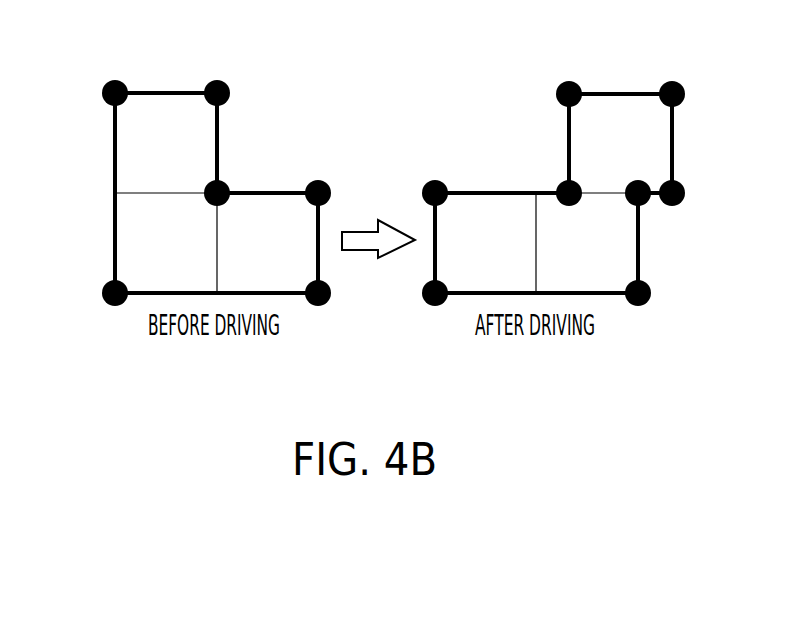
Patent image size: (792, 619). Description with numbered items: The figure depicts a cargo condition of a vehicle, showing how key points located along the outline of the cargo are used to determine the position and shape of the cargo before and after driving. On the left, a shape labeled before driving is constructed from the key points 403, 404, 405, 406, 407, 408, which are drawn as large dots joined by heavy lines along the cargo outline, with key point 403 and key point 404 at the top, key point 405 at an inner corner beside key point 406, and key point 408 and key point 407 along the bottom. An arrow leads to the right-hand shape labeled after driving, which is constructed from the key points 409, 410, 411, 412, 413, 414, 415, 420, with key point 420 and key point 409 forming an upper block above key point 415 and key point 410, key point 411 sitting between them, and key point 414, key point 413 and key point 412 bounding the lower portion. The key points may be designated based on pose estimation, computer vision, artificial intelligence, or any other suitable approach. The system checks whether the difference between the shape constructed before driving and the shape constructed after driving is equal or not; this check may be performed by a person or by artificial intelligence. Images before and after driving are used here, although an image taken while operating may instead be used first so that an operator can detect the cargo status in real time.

The key point 403 is at (113, 81).
The key point 404 is at (215, 81).
The key point 405 is at (224, 181).
The key point 406 is at (319, 181).
The key point 407 is at (317, 306).
The key point 408 is at (113, 306).
The key point 409 is at (673, 82).
The key point 410 is at (684, 192).
The key point 411 is at (646, 204).
The key point 412 is at (636, 306).
The key point 413 is at (433, 306).
The key point 414 is at (440, 181).
The key point 415 is at (558, 188).
The key point 420 is at (571, 82).